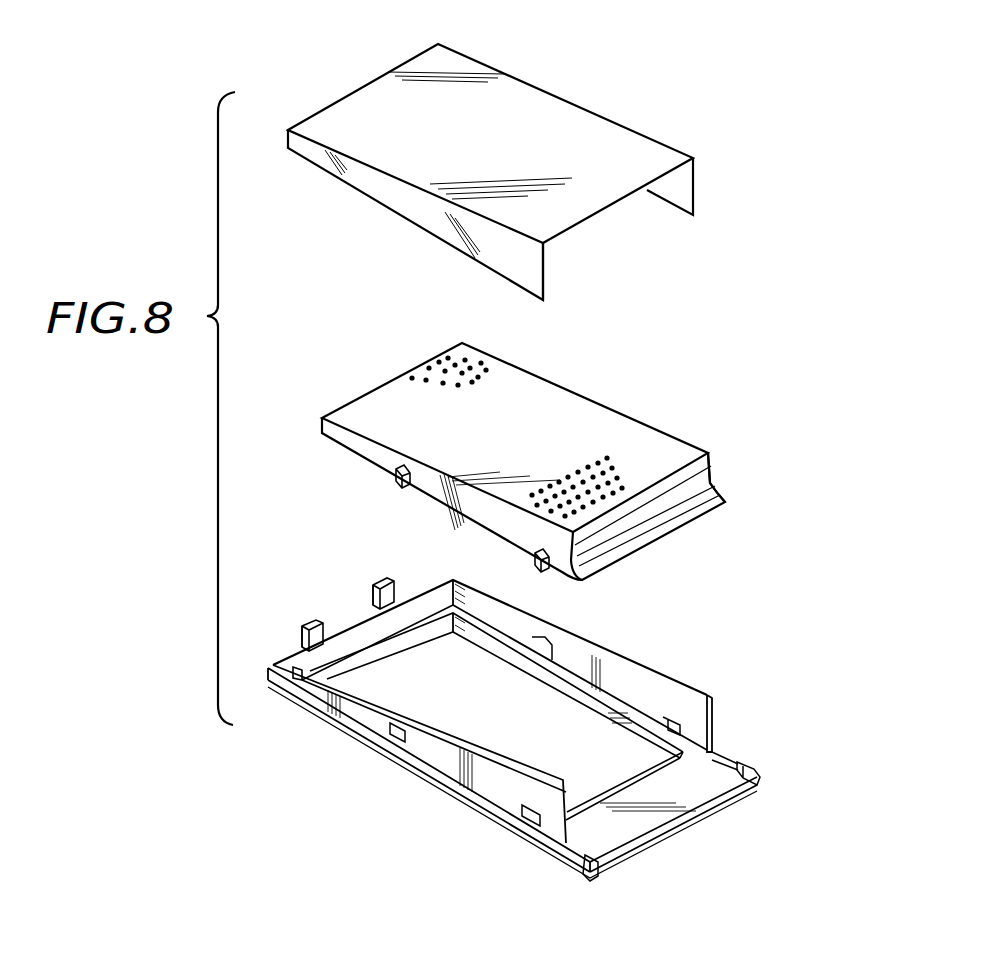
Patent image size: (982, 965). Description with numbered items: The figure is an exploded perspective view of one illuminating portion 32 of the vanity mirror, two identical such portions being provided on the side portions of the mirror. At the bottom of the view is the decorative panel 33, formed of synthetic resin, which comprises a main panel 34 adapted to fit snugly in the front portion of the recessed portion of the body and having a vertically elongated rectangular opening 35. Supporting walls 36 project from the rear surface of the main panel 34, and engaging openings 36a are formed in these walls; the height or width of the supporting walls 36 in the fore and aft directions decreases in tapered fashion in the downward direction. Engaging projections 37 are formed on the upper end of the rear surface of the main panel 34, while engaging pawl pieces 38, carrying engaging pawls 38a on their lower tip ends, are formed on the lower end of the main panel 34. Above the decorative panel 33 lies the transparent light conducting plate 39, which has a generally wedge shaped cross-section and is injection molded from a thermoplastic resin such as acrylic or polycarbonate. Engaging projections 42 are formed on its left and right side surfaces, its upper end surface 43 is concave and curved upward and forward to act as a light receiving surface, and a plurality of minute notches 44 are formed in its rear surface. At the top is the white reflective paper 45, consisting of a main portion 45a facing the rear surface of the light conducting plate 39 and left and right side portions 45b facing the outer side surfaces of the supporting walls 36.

The illuminating portion 32 is at (790, 321).
The decorative panel 33 is at (690, 800).
The main panel 34 is at (640, 828).
The opening 35 is at (657, 762).
The supporting walls 36 is at (640, 690).
The engaging openings 36a is at (388, 723).
The engaging projections 37 is at (752, 768).
The engaging pawl pieces 38 is at (310, 618).
The engaging pawls 38a is at (296, 632).
The light conducting plate 39 is at (560, 386).
The engaging projections 42 is at (395, 478).
The upper end surface 43 is at (702, 475).
The minute notches 44 is at (455, 353).
The reflective paper 45 is at (628, 127).
The main portion 45a is at (538, 118).
The side portions 45b is at (677, 186).